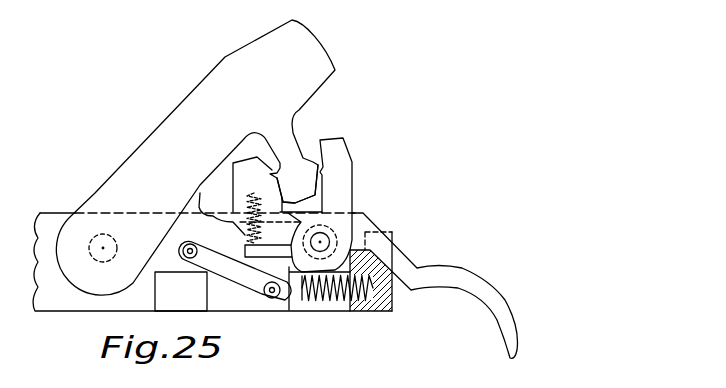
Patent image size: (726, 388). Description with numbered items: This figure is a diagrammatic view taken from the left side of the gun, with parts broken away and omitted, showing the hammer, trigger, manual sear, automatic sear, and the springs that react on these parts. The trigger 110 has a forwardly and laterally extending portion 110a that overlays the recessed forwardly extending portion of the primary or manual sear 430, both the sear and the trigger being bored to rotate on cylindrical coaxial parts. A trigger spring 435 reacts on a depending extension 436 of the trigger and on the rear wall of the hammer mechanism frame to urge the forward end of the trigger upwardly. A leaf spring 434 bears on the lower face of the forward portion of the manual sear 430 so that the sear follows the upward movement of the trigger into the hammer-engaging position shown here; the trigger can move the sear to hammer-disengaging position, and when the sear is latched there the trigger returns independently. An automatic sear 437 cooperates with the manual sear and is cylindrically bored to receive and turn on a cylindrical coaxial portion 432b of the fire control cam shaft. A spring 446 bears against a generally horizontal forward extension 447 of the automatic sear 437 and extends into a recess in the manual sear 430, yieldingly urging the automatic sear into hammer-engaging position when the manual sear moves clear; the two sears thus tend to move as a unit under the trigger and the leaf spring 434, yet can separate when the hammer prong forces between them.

The trigger 110 is at (477, 249).
The forwardly and laterally extending portion of the trigger 110a is at (200, 192).
The manual sear 430 is at (260, 168).
The cylindrical coaxial portion of the fire control cam shaft 432b is at (320, 242).
The leaf spring 434 is at (207, 237).
The trigger spring 435 is at (316, 303).
The depending extension of the trigger 436 is at (290, 310).
The automatic sear 437 is at (343, 180).
The spring 446 is at (210, 233).
The forward extension of the automatic sear 447 is at (268, 250).